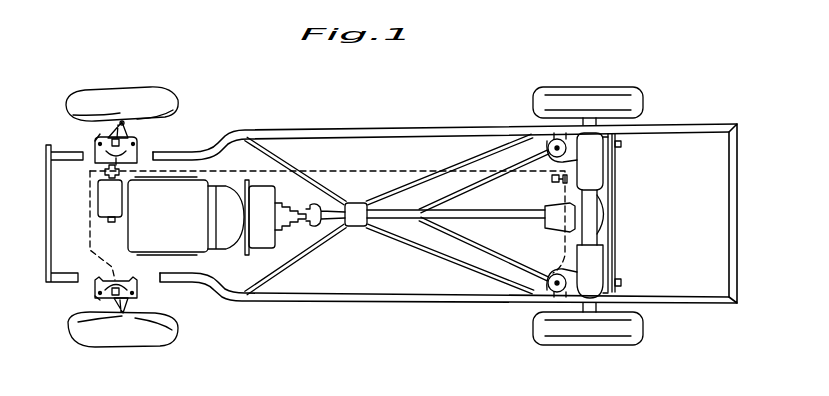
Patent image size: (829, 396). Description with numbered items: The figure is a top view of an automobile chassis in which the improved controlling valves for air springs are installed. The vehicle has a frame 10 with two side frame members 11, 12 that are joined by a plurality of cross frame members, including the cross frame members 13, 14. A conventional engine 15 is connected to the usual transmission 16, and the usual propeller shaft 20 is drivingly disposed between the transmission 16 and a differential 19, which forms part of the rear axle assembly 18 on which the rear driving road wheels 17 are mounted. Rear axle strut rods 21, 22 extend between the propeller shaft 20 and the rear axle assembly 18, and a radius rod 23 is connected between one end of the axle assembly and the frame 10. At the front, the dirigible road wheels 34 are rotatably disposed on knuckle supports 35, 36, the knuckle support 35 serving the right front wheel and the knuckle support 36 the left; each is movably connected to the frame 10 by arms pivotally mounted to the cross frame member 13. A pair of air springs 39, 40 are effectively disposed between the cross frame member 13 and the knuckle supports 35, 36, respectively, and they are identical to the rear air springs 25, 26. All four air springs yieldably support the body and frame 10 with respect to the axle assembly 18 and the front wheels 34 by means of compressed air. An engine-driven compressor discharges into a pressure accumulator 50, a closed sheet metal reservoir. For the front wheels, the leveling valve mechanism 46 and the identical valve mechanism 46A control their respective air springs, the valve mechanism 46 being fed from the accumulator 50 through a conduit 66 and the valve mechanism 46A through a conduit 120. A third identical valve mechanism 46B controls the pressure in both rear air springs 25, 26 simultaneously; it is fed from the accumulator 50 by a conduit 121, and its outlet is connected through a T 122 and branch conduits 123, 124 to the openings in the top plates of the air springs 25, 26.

The frame 10 is at (422, 128).
The side frame member 11 is at (333, 292).
The side frame member 12 is at (305, 130).
The cross frame member 13 is at (137, 292).
The cross frame member 14 is at (593, 253).
The engine 15 is at (186, 216).
The transmission 16 is at (306, 217).
The rear driving road wheels 17 is at (627, 92).
The rear axle assembly 18 is at (628, 266).
The differential 19 is at (605, 217).
The propeller shaft 20 is at (500, 220).
The rear axle strut rod 21 is at (478, 251).
The rear axle strut rod 22 is at (448, 199).
The radius rod 23 is at (620, 164).
The air spring 25 is at (540, 287).
The air spring 26 is at (540, 143).
The front dirigible road wheels 34 is at (176, 100).
The knuckle support 35 is at (122, 121).
The knuckle support 36 is at (124, 314).
The air spring 39 is at (105, 133).
The air spring 40 is at (106, 303).
The leveling valve mechanism 46 is at (127, 142).
The valve mechanism 46A is at (129, 298).
The valve mechanism 46B is at (549, 182).
The pressure accumulator 50 is at (110, 196).
The conduit 66 is at (103, 164).
The conduit 120 is at (87, 233).
The conduit 121 is at (398, 170).
The T 122 is at (583, 188).
The branch conduit 123 is at (564, 252).
The branch conduit 124 is at (545, 157).